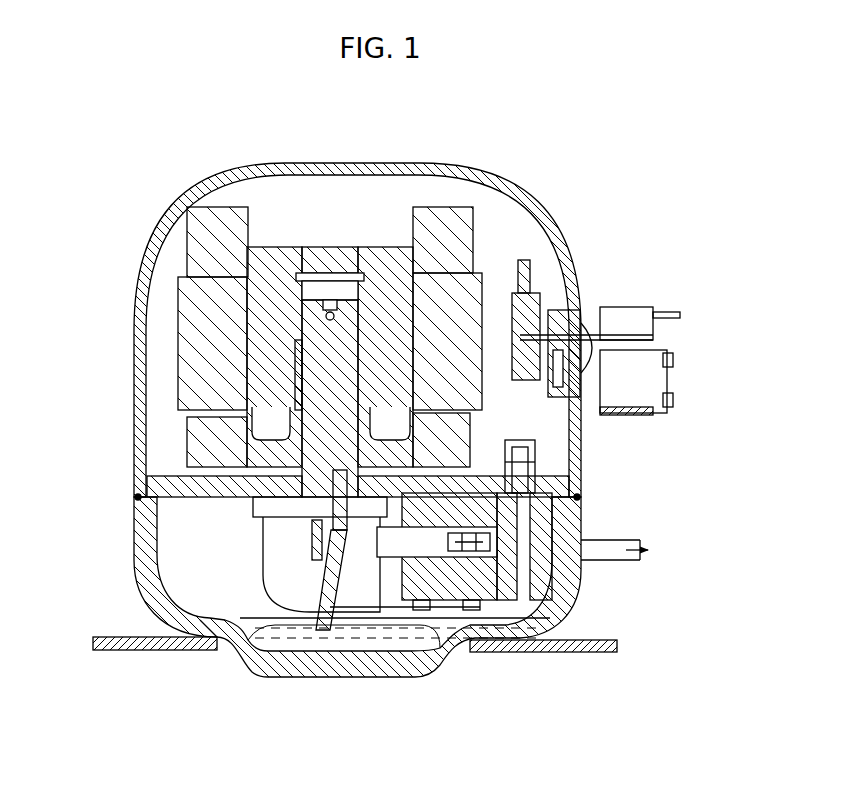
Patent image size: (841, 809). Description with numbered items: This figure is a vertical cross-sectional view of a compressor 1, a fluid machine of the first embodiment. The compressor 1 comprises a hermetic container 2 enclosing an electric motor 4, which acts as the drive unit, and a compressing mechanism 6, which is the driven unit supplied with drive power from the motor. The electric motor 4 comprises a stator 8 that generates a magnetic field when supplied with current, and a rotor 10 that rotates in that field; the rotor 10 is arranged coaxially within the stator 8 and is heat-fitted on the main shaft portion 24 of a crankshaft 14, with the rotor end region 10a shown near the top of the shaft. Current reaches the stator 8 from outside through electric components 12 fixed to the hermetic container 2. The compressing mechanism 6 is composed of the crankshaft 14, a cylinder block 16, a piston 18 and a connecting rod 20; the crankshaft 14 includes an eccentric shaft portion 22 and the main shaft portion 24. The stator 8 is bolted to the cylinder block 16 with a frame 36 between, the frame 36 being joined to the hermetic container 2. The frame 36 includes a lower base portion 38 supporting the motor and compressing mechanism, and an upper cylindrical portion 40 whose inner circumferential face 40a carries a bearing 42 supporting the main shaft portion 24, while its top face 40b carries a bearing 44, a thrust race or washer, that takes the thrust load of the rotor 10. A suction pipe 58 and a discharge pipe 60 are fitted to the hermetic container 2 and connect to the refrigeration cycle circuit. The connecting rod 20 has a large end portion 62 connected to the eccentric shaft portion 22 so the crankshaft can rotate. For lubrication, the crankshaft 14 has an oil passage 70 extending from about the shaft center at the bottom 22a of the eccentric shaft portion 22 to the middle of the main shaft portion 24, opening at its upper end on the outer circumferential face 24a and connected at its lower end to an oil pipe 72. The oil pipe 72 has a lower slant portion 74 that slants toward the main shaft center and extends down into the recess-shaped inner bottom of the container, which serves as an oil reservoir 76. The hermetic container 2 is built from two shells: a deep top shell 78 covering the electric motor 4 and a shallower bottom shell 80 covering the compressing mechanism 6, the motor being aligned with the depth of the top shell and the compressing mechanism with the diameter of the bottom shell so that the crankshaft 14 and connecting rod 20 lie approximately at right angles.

The compressor 1 is at (598, 196).
The hermetic container 2 is at (132, 452).
The electric motor 4 is at (176, 332).
The compressing mechanism 6 is at (510, 612).
The stator 8 is at (449, 233).
The rotor 10 is at (278, 330).
The rotor end ring 10a is at (316, 300).
The electric components 12 is at (607, 290).
The crankshaft 14 is at (335, 490).
The cylinder block 16 is at (445, 612).
The piston 18 is at (490, 478).
The connecting rod 20 is at (363, 620).
The eccentric shaft portion 22 is at (342, 630).
The bottom of the eccentric shaft portion 22a is at (210, 635).
The main shaft portion 24 is at (345, 340).
The outer circumferential face 24a is at (272, 320).
The frame 36 is at (517, 465).
The lower base portion 38 is at (157, 488).
The upper cylindrical portion 40 is at (258, 418).
The inner circumferential face 40a is at (293, 375).
The top face 40b is at (392, 300).
The bearing 42 is at (352, 387).
The bearing 44 is at (293, 343).
The suction pipe 58 is at (606, 538).
The discharge pipe 60 is at (606, 562).
The large end portion 62 is at (305, 562).
The oil passage 70 is at (378, 545).
The oil pipe 72 is at (252, 668).
The slant portion 74 is at (292, 650).
The oil reservoir 76 is at (395, 640).
The top shell 78 is at (150, 240).
The bottom shell 80 is at (140, 528).